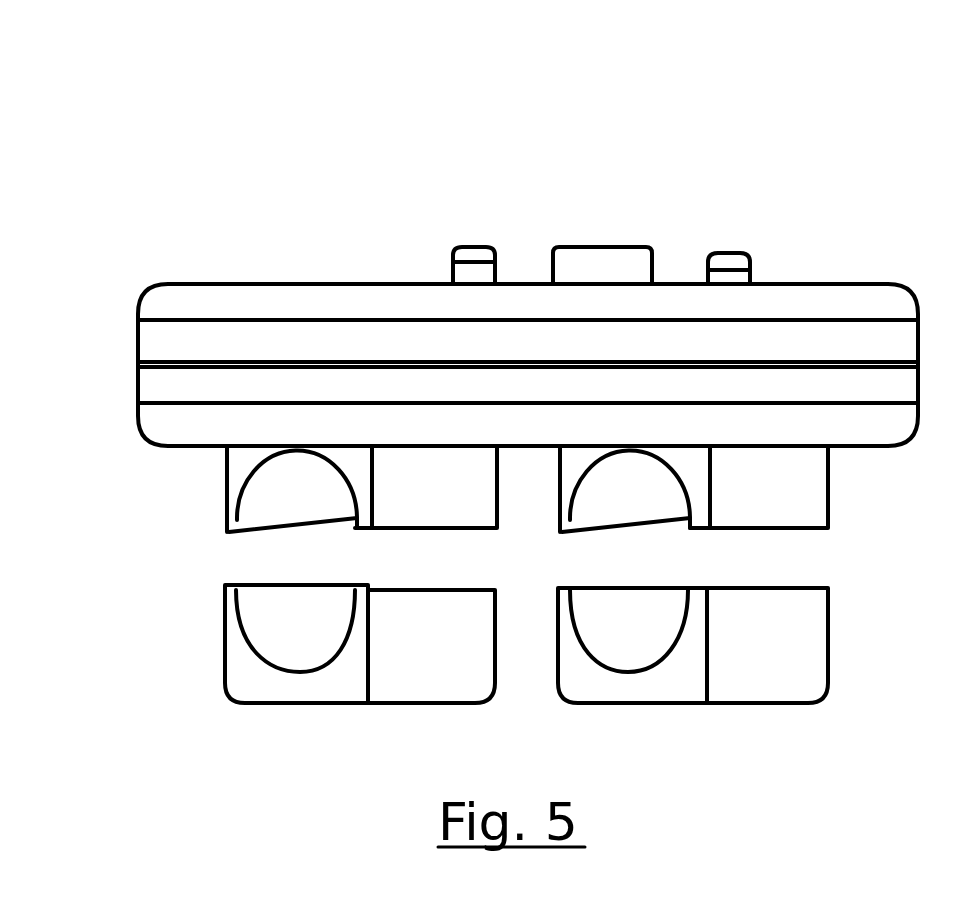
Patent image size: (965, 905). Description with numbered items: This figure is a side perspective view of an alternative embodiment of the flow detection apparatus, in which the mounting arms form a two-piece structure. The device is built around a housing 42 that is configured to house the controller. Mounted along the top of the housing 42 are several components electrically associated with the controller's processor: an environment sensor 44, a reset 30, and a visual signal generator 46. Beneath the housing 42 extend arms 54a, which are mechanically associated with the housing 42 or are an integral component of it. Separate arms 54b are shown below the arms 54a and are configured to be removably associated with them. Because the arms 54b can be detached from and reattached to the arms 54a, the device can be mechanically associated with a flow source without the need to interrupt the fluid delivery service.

The reset 30 is at (600, 247).
The housing 42 is at (292, 296).
The environment sensor 44 is at (473, 247).
The visual signal generator 46 is at (728, 252).
The arms 54a is at (240, 478).
The arms 54b is at (236, 665).